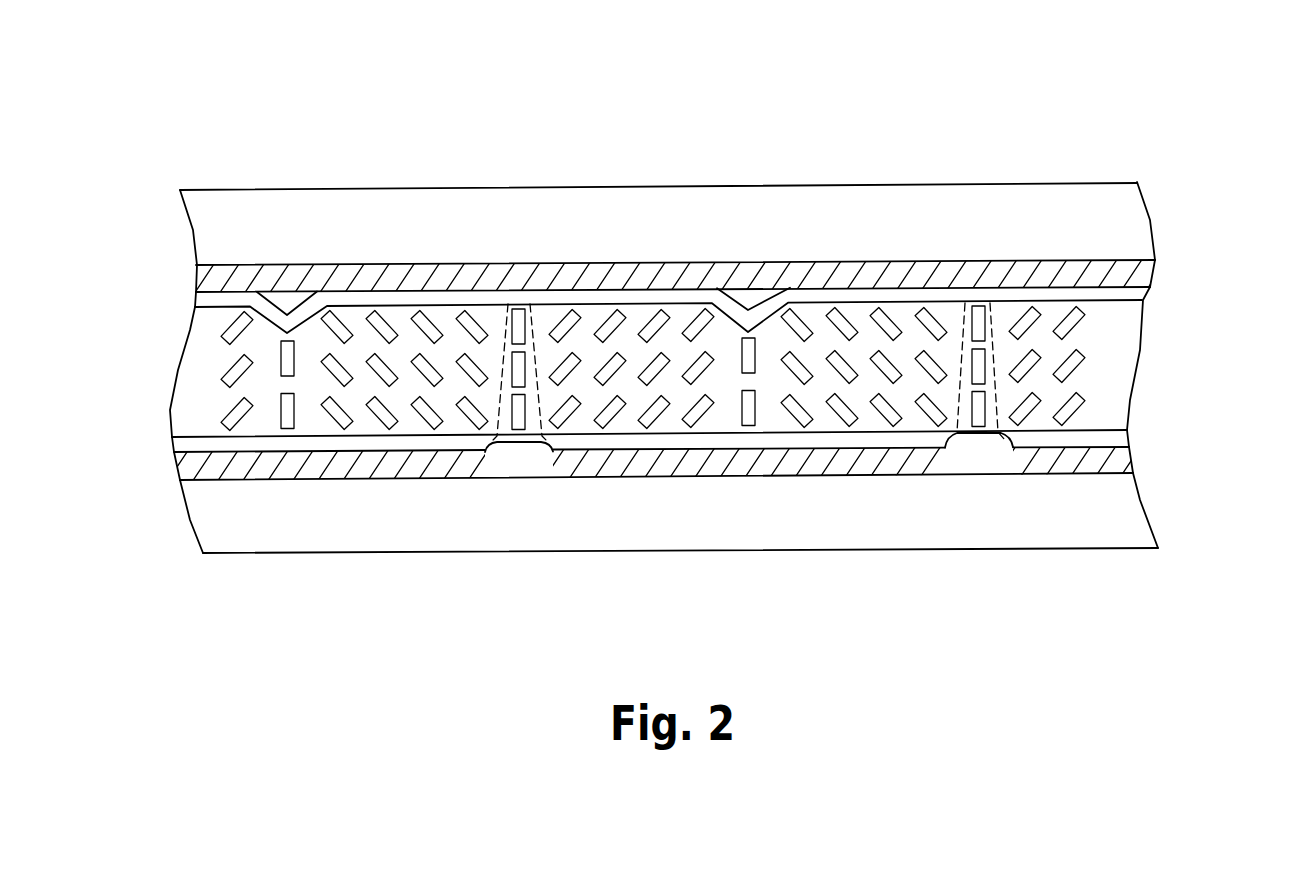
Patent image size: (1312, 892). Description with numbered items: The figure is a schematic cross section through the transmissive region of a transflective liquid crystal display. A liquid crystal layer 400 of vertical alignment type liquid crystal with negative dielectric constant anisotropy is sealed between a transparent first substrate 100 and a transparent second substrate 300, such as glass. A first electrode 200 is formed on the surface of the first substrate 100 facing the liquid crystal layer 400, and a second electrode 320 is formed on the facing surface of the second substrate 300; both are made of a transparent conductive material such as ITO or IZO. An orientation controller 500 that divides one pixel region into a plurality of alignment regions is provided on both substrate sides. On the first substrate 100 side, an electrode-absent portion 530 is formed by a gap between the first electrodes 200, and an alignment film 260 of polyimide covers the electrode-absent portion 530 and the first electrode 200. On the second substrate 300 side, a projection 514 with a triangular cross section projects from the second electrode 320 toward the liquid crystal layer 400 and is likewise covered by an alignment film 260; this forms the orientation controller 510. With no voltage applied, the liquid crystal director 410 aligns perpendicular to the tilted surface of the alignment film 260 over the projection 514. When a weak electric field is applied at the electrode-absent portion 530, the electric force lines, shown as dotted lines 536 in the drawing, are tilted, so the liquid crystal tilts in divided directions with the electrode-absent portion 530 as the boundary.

The first substrate 100 is at (1103, 513).
The first electrode 200 is at (1125, 455).
The alignment film 260 is at (1143, 292).
The second substrate 300 is at (1125, 223).
The second electrode 320 is at (1140, 272).
The liquid crystal layer 400 is at (650, 362).
The liquid crystal director 410 is at (1080, 370).
The orientation controller 500 is at (617, 358).
The orientation controller 510 is at (569, 196).
The projection 514 is at (778, 289).
The electrode-absent portion 530 is at (775, 471).
The side surface of second spacer 536 is at (957, 432).